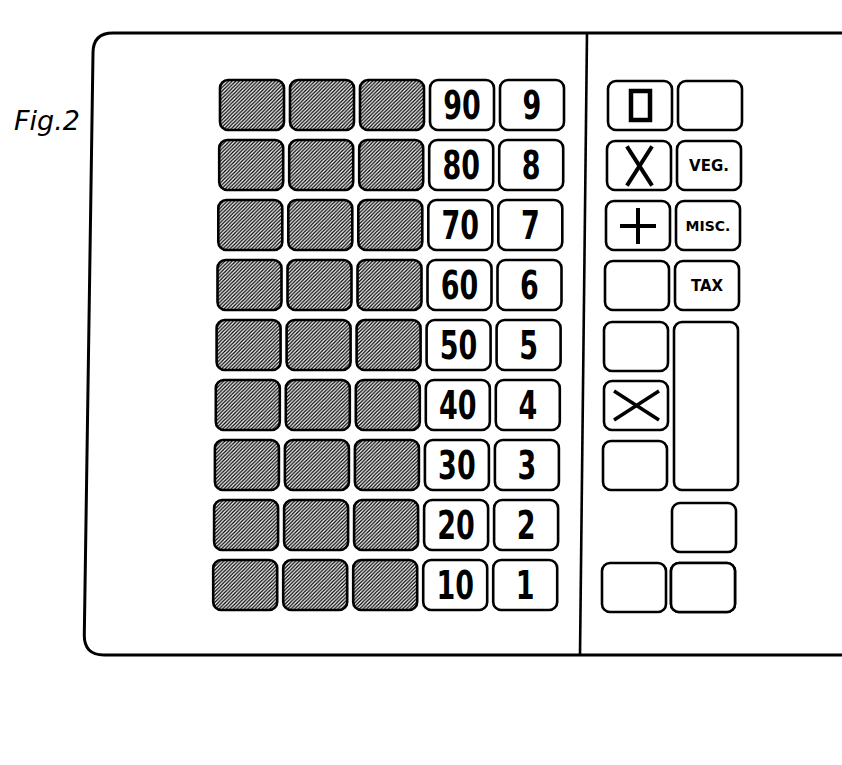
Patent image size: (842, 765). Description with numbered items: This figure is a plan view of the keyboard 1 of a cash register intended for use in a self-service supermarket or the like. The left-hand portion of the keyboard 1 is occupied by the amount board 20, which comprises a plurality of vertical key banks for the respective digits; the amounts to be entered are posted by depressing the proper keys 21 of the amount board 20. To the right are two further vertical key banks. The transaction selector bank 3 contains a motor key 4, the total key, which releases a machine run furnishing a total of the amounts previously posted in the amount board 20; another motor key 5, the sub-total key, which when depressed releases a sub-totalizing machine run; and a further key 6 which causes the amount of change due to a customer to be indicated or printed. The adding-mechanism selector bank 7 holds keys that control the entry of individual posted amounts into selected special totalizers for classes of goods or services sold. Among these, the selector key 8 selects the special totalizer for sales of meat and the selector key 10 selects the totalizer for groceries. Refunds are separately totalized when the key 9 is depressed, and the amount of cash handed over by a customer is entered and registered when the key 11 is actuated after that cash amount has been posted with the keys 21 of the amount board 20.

The keyboard 1 is at (785, 435).
The transaction selector bank 3 is at (633, 621).
The motor key (total key) 4 is at (605, 290).
The motor key (sub-total key) 5 is at (604, 340).
The change key 6 is at (603, 458).
The adding-mechanism selector bank 7 is at (705, 621).
The meat selector key 8 is at (742, 109).
The refund key 9 is at (736, 532).
The grocery selector key 10 is at (739, 354).
The cash received key 11 is at (735, 589).
The amount board 20 is at (365, 632).
The amount keys 21 is at (500, 212).